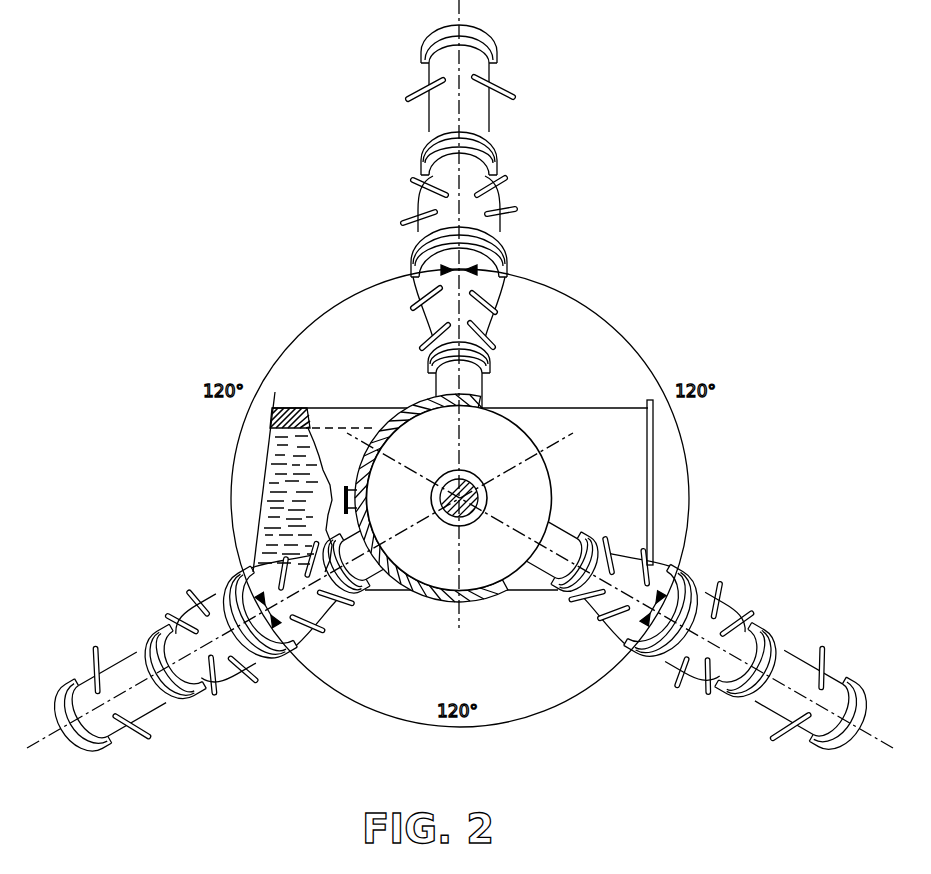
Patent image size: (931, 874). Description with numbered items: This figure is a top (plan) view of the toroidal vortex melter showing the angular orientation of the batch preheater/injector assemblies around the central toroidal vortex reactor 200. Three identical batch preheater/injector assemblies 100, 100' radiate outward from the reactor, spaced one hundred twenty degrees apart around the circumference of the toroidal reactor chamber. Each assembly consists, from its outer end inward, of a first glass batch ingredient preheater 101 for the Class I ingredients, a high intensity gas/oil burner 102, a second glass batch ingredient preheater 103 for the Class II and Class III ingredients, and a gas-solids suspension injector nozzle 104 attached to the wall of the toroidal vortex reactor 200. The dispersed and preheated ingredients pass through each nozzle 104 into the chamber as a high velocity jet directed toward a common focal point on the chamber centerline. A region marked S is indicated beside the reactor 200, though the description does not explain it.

The batch preheater/injector assembly 100 is at (224, 634).
The batch preheater/injector assembly 100' is at (696, 633).
The first glass batch ingredient preheater 101 is at (484, 111).
The high intensity gas/oil burner 102 is at (497, 226).
The second glass batch ingredient preheater 103 is at (492, 288).
The gas-solids suspension injector nozzle 104 is at (475, 387).
The toroidal vortex reactor 200 is at (426, 562).
The liquid / slurry S is at (290, 500).